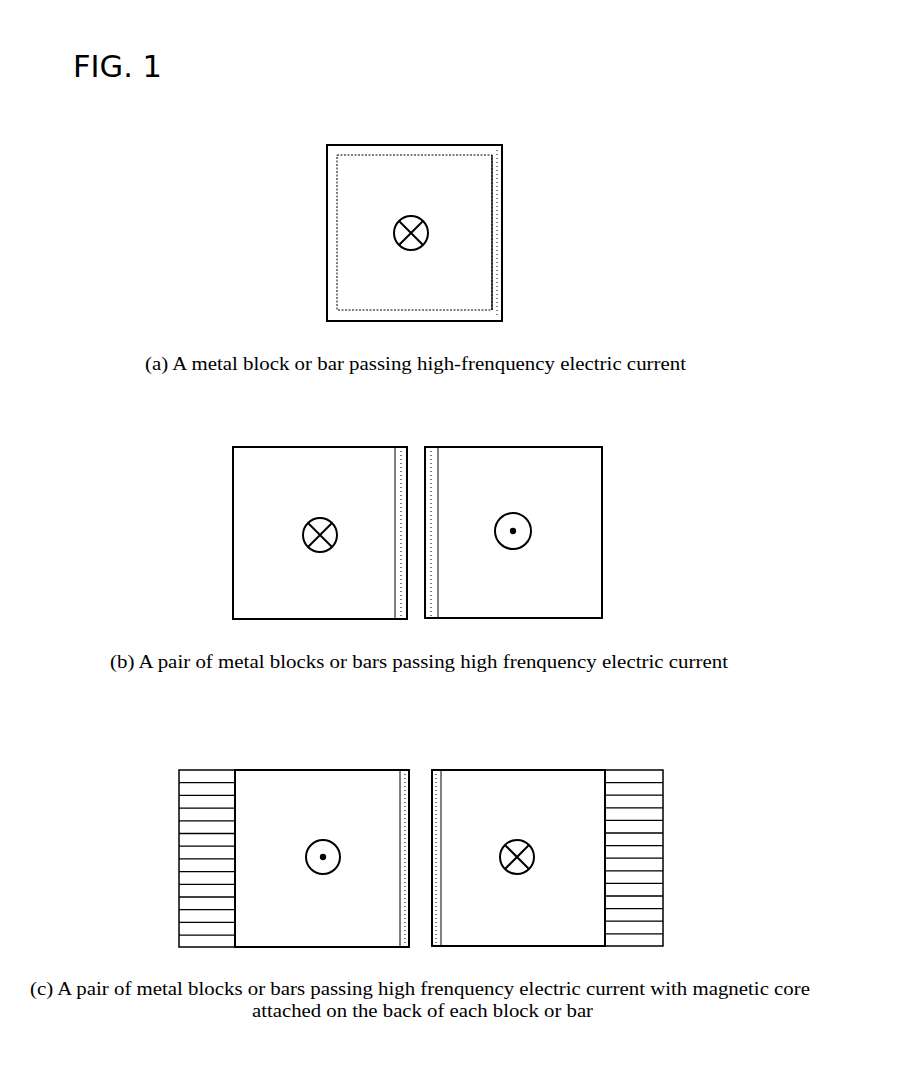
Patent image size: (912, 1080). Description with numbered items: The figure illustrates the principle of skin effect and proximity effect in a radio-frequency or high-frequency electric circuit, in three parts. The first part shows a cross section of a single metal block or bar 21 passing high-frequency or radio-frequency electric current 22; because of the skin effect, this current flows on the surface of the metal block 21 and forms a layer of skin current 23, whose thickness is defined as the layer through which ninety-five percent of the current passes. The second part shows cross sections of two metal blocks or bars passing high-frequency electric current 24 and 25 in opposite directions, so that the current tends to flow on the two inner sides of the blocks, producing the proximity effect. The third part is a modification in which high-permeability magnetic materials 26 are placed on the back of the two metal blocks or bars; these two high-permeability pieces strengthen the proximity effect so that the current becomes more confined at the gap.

The metal block or bar 21 is at (453, 177).
The high-frequency electric current 22 is at (422, 233).
The layer of skin current 23 is at (493, 282).
The high-frequency electric current 24 is at (337, 537).
The high-frequency electric current 25 is at (520, 534).
The high-permeability magnetic materials 26 is at (625, 835).